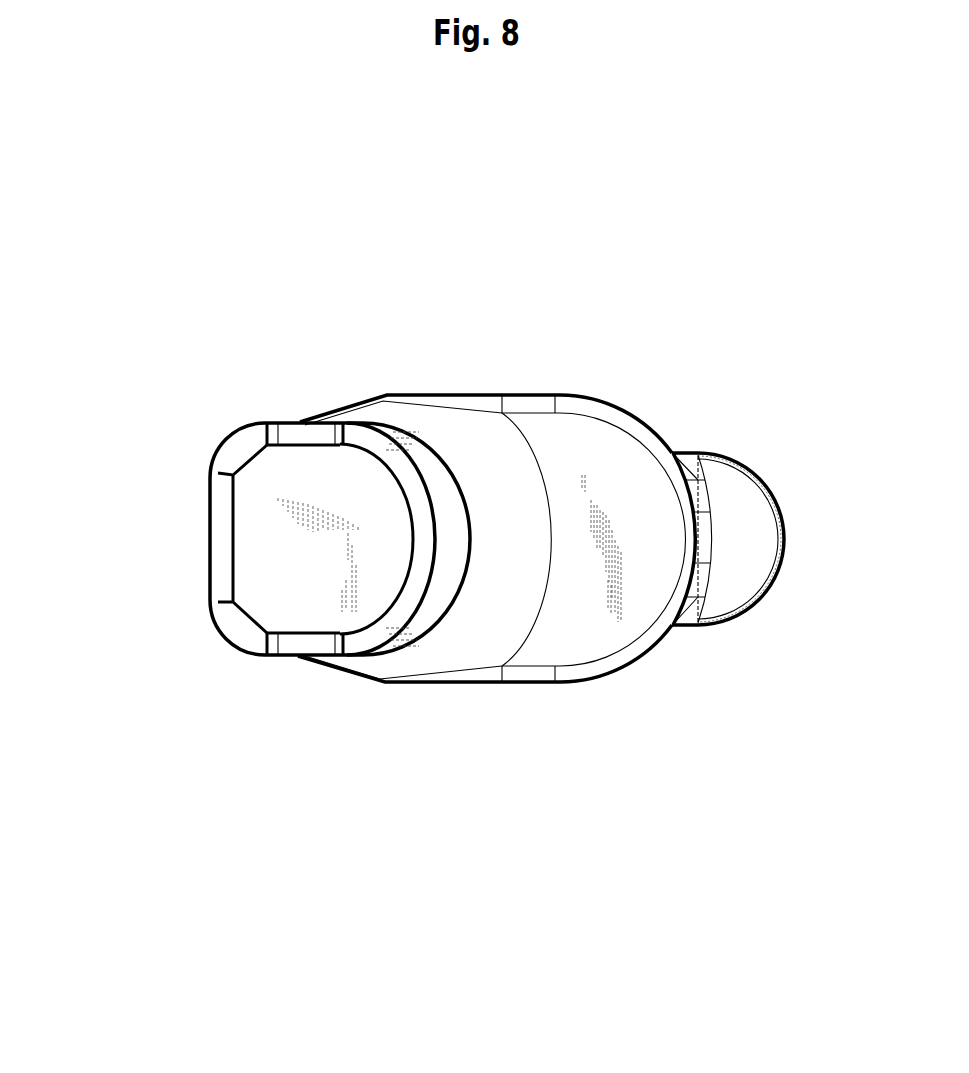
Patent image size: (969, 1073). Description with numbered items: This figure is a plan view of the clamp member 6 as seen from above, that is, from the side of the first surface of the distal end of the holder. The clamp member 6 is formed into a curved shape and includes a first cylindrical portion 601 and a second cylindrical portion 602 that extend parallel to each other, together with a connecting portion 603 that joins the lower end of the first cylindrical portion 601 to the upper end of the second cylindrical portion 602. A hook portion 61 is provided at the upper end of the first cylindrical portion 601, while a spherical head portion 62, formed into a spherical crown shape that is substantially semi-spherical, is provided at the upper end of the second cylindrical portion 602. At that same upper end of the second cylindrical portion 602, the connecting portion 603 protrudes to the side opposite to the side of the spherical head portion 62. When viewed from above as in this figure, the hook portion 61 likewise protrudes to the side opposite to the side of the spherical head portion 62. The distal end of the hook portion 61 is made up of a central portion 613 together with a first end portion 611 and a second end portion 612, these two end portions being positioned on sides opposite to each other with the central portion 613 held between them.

The clamp member 6 is at (464, 888).
The hook portion 61 is at (240, 541).
The spherical head portion 62 is at (790, 521).
The first cylindrical portion 601 is at (397, 643).
The second cylindrical portion 602 is at (633, 660).
The connecting portion 603 is at (437, 684).
The first end portion 611 is at (233, 437).
The second end portion 612 is at (237, 640).
The central portion 613 is at (208, 570).